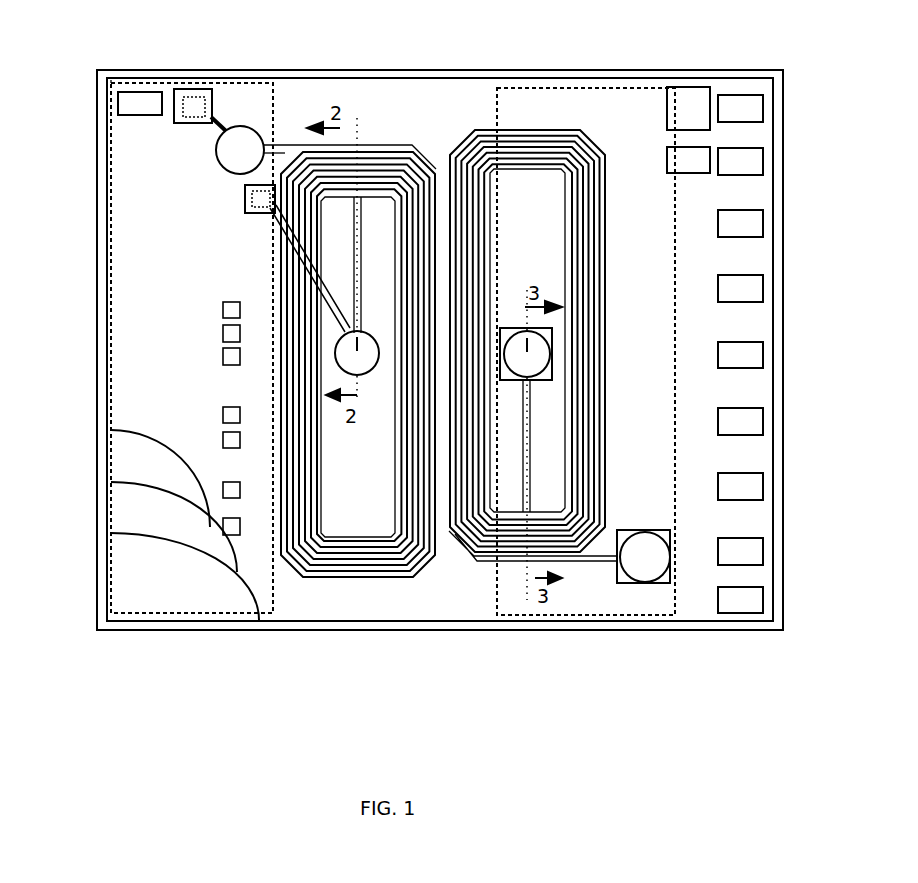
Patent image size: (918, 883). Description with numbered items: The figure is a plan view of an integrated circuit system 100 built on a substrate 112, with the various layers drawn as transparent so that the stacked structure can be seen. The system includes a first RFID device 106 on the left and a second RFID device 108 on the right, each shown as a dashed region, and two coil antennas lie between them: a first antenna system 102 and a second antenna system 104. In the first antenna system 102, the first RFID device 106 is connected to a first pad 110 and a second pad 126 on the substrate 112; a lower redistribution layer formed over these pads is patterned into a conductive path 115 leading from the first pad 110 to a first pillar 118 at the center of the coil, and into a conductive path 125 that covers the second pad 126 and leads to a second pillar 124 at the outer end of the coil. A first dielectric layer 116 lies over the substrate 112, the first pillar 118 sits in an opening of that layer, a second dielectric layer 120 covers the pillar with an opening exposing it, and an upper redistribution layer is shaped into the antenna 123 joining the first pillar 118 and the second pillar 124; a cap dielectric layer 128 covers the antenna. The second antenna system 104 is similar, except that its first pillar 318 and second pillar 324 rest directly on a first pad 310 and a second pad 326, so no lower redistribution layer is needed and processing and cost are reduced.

The integrated circuit system 100 is at (120, 48).
The first antenna system 102 is at (352, 605).
The second antenna system 104 is at (528, 606).
The first RFID device 106 is at (160, 295).
The second RFID device 108 is at (635, 320).
The first pad 110 is at (245, 198).
The substrate 112 is at (164, 598).
The conductive path 115 is at (277, 223).
The first dielectric layer 116 is at (157, 523).
The first pillar 118 is at (336, 352).
The second dielectric layer 120 is at (157, 476).
The antenna 123 is at (605, 240).
The second pillar 124 is at (237, 172).
The conductive path 125 is at (222, 132).
The second pad 126 is at (200, 90).
The cap dielectric layer 128 is at (157, 426).
The first pad 310 is at (550, 345).
The first pillar 318 is at (538, 357).
The second pillar 324 is at (663, 560).
The second pad 326 is at (673, 533).